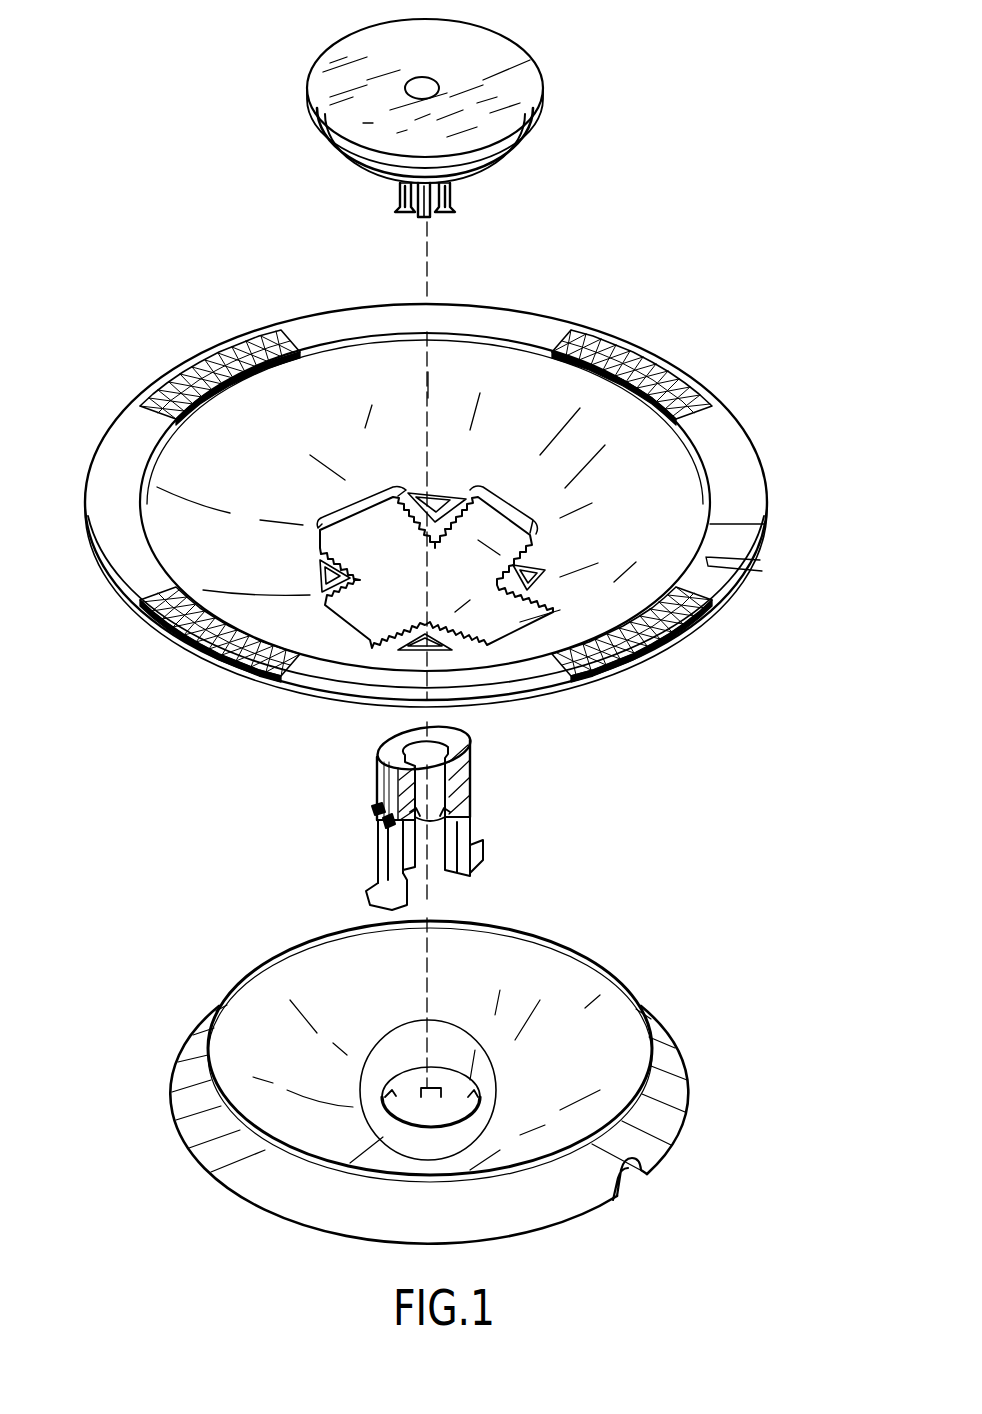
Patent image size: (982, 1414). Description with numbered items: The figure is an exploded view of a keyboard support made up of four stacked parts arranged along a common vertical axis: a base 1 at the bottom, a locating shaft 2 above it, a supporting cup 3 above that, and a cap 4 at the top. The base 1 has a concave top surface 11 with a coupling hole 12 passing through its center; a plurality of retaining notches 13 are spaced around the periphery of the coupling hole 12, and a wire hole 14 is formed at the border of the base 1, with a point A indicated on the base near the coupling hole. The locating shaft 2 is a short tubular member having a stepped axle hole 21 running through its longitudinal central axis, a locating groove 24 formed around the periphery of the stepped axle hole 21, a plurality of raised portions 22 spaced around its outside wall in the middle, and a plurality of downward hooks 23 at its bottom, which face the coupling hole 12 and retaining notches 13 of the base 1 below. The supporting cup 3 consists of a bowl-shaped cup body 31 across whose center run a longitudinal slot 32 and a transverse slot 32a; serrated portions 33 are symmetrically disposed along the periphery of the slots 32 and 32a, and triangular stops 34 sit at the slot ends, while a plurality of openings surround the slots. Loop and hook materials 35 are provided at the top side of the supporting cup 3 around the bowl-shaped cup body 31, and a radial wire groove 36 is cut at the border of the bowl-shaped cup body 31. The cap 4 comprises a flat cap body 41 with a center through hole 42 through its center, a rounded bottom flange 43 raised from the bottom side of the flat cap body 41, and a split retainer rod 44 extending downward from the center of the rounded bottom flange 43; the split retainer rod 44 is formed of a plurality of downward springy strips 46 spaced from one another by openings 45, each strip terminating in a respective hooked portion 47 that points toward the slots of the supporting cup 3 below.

The base 1 is at (439, 1082).
The concave top surface 11 is at (580, 1062).
The coupling hole 12 is at (452, 1093).
The retaining notches 13 is at (513, 1080).
The wire hole 14 is at (636, 1180).
The locating shaft 2 is at (444, 818).
The stepped axle hole 21 is at (440, 835).
The raised portions 22 is at (372, 808).
The downward hooks 23 is at (368, 893).
The locating groove 24 is at (465, 815).
The supporting cup 3 is at (445, 496).
The bowl-shaped cup body 31 is at (650, 465).
The longitudinal slot 32 is at (360, 538).
The transverse slot 32a is at (487, 537).
The serrated portions 33 is at (397, 500).
The triangular stop 34 is at (427, 497).
The loop and hook materials 35 is at (668, 362).
The radial wire groove 36 is at (737, 548).
The cap 4 is at (461, 159).
The flat cap body 41 is at (455, 92).
The center through hole 42 is at (418, 88).
The rounded bottom flange 43 is at (490, 160).
The split retainer rod 44 is at (431, 212).
The openings 45 is at (421, 217).
The downward springy strips 46 is at (447, 195).
The hooked portion 47 is at (400, 207).
The reference point A is at (357, 1073).